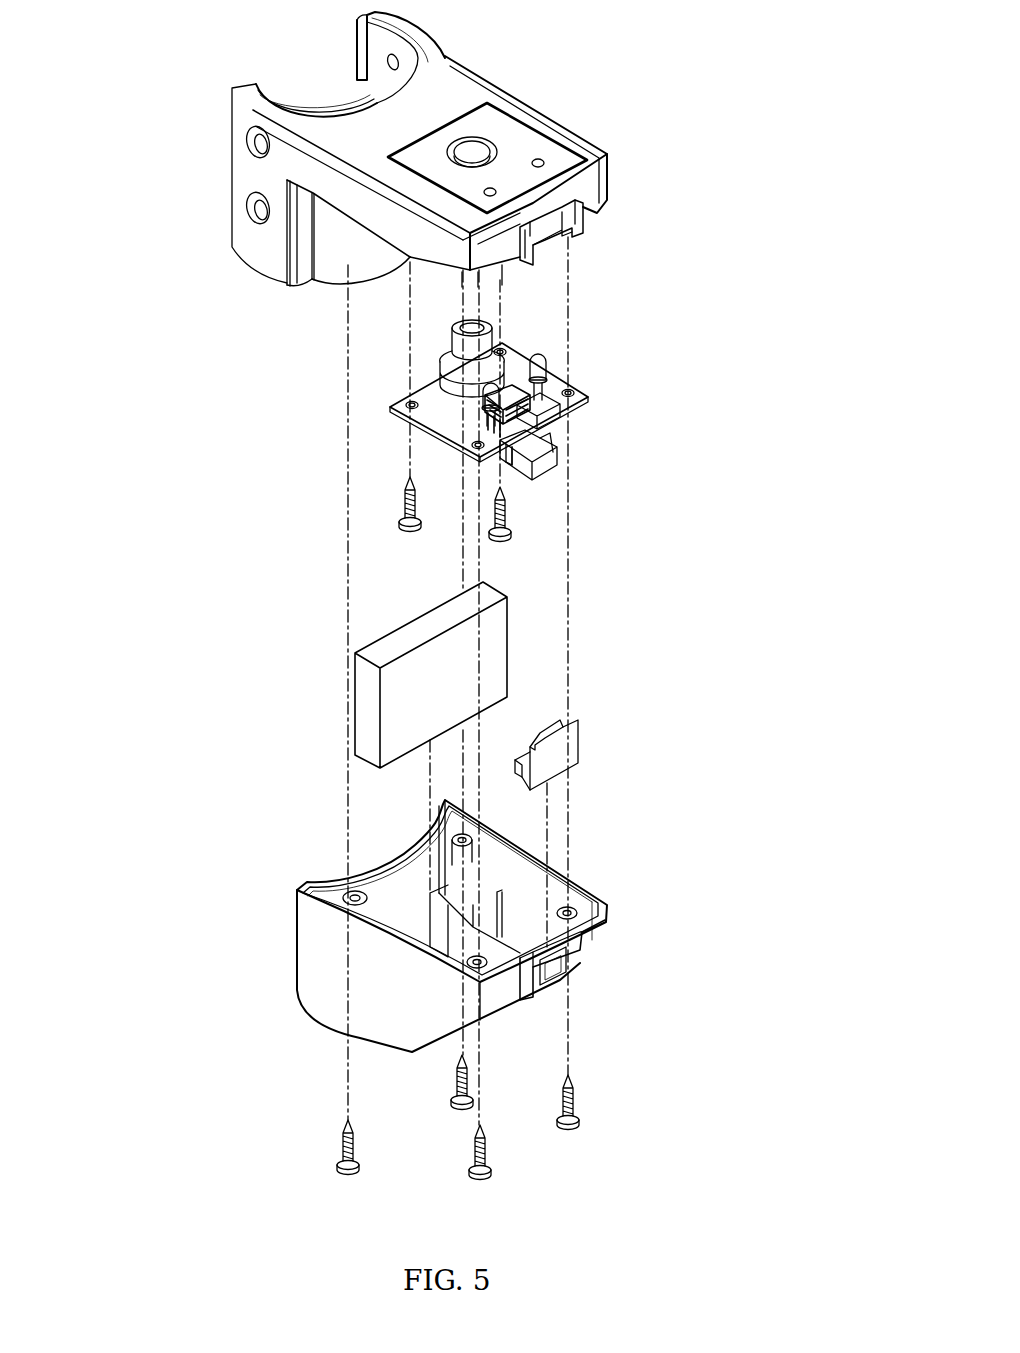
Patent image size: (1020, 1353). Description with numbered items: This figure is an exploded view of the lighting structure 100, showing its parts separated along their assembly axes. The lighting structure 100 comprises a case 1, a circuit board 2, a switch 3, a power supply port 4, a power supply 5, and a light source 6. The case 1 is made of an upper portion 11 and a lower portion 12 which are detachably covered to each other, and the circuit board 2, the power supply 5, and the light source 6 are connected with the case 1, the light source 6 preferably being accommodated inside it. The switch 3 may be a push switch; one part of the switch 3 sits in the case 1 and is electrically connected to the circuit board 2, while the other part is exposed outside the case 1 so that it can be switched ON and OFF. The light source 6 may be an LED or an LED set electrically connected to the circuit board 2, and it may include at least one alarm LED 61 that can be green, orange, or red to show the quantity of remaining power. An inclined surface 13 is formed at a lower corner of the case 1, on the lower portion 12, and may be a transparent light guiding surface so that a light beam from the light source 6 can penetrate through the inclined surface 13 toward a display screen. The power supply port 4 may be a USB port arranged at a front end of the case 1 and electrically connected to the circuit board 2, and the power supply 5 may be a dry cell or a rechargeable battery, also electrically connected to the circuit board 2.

The lighting structure 100 is at (657, 116).
The case 1 is at (198, 153).
The upper portion 11 is at (460, 85).
The lower portion 12 is at (330, 958).
The inclined surface 13 is at (505, 1015).
The circuit board 2 is at (427, 420).
The switch 3 is at (455, 348).
The power supply port 4 is at (565, 433).
The power supply 5 is at (363, 686).
The light source 6 is at (537, 486).
The alarm LED 61 is at (543, 356).